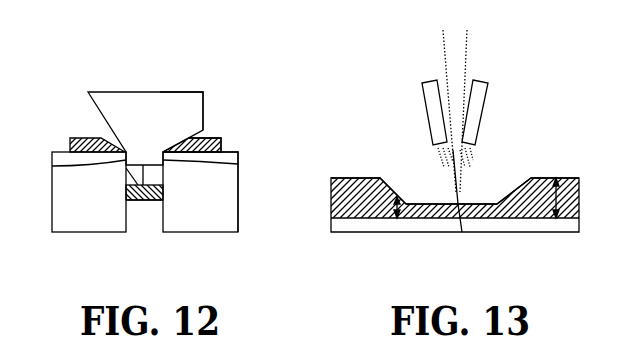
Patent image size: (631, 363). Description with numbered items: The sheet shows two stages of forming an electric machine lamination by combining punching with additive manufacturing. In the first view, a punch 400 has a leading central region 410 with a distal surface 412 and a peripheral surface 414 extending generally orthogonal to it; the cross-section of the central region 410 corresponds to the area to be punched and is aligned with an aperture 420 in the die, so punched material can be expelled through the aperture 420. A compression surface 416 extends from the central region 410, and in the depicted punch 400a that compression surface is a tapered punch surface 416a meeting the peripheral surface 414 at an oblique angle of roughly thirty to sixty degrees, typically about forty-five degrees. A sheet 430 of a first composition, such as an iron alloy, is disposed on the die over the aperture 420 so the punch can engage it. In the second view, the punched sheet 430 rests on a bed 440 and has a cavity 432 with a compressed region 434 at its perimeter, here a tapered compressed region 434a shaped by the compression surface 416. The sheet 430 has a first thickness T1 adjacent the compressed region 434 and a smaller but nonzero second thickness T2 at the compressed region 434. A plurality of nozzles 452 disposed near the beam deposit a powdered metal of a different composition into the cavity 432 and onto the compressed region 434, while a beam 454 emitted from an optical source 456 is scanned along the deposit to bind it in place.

In FIG. 12, the punch 400 is at (126, 91).
In FIG. 12, the punch 400a is at (186, 91).
In FIG. 12, the central region 410 is at (52, 166).
In FIG. 12, the distal surface 412 is at (143, 200).
In FIG. 12, the peripheral surface 414 is at (238, 162).
In FIG. 12, the compression surface 416 is at (72, 129).
In FIG. 12, the tapered punch surface 416a is at (194, 132).
In FIG. 12, the aperture 420 is at (136, 201).
In FIG. 12, the sheet 430 is at (220, 146).
In FIG. 13, the cavity 432 is at (488, 168).
In FIG. 13, the compressed region 434 is at (418, 168).
In FIG. 13, the tapered compressed region 434a is at (543, 177).
In FIG. 13, the bed 440 is at (505, 233).
In FIG. 13, the nozzles 452 is at (422, 97).
In FIG. 13, the beam 454 is at (462, 232).
In FIG. 13, the optical source 456 is at (467, 57).
In FIG. 13, the first thickness T1 is at (557, 208).
In FIG. 13, the second thickness T2 is at (397, 208).